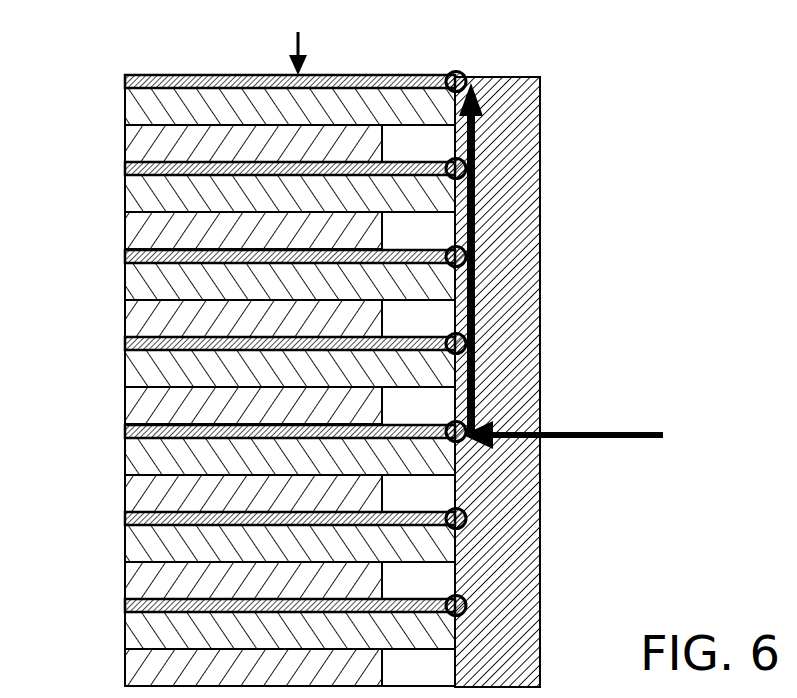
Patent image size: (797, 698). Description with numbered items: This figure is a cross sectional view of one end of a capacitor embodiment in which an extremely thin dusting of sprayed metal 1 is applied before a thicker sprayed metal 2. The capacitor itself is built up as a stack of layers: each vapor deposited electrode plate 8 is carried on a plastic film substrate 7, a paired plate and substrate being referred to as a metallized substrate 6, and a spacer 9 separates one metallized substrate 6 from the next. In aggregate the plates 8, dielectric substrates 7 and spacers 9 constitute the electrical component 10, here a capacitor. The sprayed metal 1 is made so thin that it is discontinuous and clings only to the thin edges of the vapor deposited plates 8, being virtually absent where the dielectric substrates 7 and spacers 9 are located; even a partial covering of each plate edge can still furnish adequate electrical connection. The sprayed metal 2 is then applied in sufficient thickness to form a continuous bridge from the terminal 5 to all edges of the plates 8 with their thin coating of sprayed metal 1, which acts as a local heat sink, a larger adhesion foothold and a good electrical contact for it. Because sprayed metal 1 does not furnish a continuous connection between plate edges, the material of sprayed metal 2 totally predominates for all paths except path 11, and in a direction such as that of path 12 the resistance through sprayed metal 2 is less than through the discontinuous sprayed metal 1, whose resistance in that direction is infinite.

The sprayed metal 1 is at (470, 522).
The sprayed metal 2 is at (540, 585).
The terminal 5 is at (645, 439).
The metallized substrate 6 is at (113, 84).
The plastic film substrate 7 is at (125, 117).
The electrode plate 8 is at (207, 76).
The spacer 9 is at (125, 143).
The electrical component 10 is at (298, 45).
The path 11 is at (495, 434).
The path 12 is at (478, 288).